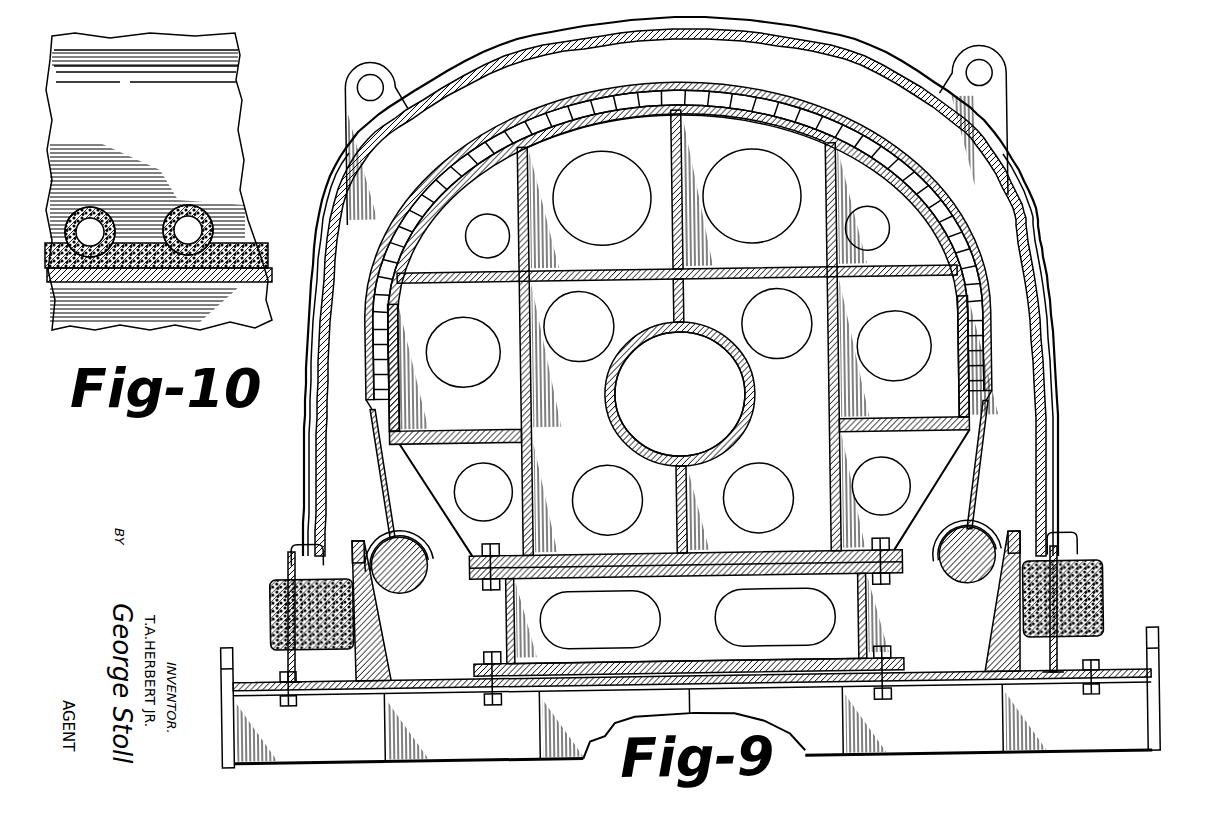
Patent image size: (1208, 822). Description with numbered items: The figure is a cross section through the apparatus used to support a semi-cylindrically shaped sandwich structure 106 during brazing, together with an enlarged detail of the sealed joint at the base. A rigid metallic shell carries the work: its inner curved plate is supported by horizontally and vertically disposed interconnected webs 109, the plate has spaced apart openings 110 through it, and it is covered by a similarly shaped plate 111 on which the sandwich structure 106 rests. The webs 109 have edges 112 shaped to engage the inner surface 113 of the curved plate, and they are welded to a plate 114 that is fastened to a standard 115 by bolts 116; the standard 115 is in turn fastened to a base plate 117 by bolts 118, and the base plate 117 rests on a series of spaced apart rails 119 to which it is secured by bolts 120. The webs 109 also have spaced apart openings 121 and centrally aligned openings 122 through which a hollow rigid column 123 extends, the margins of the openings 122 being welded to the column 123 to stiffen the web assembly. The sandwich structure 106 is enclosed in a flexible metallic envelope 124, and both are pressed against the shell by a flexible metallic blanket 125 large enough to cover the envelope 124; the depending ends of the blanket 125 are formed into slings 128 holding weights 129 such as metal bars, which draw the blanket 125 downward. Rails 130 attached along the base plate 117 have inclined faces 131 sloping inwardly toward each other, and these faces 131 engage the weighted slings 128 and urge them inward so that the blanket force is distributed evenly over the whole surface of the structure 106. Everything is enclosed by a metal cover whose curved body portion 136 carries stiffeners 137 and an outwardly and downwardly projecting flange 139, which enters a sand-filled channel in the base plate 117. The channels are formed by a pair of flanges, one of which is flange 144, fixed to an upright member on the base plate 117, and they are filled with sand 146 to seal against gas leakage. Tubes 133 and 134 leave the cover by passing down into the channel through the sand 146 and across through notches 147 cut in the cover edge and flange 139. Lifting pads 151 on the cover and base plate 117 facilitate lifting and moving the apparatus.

In FIG. 9, the sandwich structure 106 is at (970, 306).
In FIG. 9, the webs 109 is at (703, 282).
In FIG. 9, the openings 110 is at (503, 190).
In FIG. 9, the plate 111 is at (393, 443).
In FIG. 9, the edges 112 is at (686, 120).
In FIG. 9, the inner surface 113 is at (757, 125).
In FIG. 9, the plate 114 is at (770, 551).
In FIG. 9, the standard 115 is at (863, 608).
In FIG. 9, the bolts 116 is at (868, 543).
In FIG. 9, the base plate 117 is at (1100, 668).
In FIG. 9, the bolts 118 is at (470, 663).
In FIG. 9, the rails 119 is at (323, 748).
In FIG. 9, the bolts 120 is at (278, 673).
In FIG. 9, the openings 121 is at (770, 228).
In FIG. 9, the openings 122 is at (749, 405).
In FIG. 9, the hollow rigid column 123 is at (732, 357).
In FIG. 9, the flexible metallic envelope 124 is at (986, 332).
In FIG. 9, the flexible metallic blanket 125 is at (993, 408).
In FIG. 9, the slings 128 is at (418, 588).
In FIG. 9, the weights 129 is at (410, 550).
In FIG. 9, the rails 130 is at (357, 543).
In FIG. 9, the inclined faces 131 is at (378, 630).
In FIG. 10, the tube 133 is at (110, 229).
In FIG. 10, the tube 134 is at (202, 213).
In FIG. 9, the curved body portion 136 is at (1038, 467).
In FIG. 9, the stiffeners 137 is at (815, 45).
In FIG. 9, the flange 139 is at (1077, 546).
In FIG. 10, the flange 139 is at (228, 101).
In FIG. 10, the flange 144 is at (214, 280).
In FIG. 10, the sand 146 is at (258, 251).
In FIG. 10, the notches 147 is at (88, 208).
In FIG. 9, the lifting pads 151 is at (392, 90).